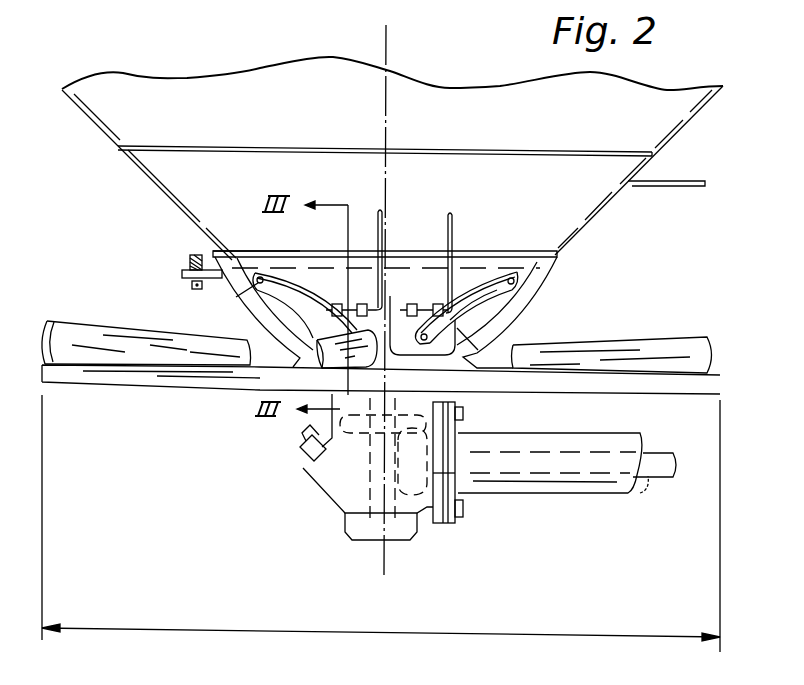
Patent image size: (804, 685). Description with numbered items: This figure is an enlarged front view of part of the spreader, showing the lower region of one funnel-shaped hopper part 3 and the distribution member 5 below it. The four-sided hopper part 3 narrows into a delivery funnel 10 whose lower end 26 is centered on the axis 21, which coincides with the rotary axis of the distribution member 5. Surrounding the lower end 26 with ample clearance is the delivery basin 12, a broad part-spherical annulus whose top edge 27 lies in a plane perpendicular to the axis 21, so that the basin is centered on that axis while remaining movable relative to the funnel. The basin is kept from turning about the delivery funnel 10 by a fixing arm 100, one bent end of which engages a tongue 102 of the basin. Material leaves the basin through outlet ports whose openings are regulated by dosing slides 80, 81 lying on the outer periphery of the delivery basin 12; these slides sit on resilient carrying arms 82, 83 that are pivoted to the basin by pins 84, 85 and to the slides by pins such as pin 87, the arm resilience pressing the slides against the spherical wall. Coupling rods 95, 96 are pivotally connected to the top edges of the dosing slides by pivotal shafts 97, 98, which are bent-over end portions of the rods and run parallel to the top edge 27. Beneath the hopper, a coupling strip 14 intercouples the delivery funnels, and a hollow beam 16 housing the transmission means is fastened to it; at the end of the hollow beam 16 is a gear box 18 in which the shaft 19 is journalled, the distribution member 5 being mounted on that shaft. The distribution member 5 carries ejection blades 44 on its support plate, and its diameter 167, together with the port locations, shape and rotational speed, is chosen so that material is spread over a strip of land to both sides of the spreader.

The funnel-shaped hopper part 3 is at (176, 90).
The distribution member 5 is at (121, 392).
The delivery funnel 10 is at (160, 170).
The delivery basin 12 is at (562, 266).
The coupling strip 14 is at (690, 181).
The hollow beam 16 is at (618, 424).
The gear box 18 is at (337, 485).
The shaft 19 is at (437, 397).
The axis 21 is at (388, 44).
The lower end of the delivery funnel 26 is at (492, 246).
The top edge 27 is at (242, 250).
The ejection blades 44 is at (84, 330).
The dosing slide 80 is at (316, 345).
The dosing slide 81 is at (403, 322).
The carrying arm 82 is at (276, 302).
The carrying arm 83 is at (497, 290).
The pin 84 is at (236, 297).
The pin 85 is at (520, 286).
The pin 87 is at (480, 348).
The coupling rod 95 is at (378, 212).
The coupling rod 96 is at (468, 196).
The pivotal shaft 97 is at (352, 304).
The pivotal shaft 98 is at (430, 292).
The fixing arm 100 is at (192, 258).
The tongue 102 is at (182, 278).
The diameter of the distribution member 167 is at (332, 614).